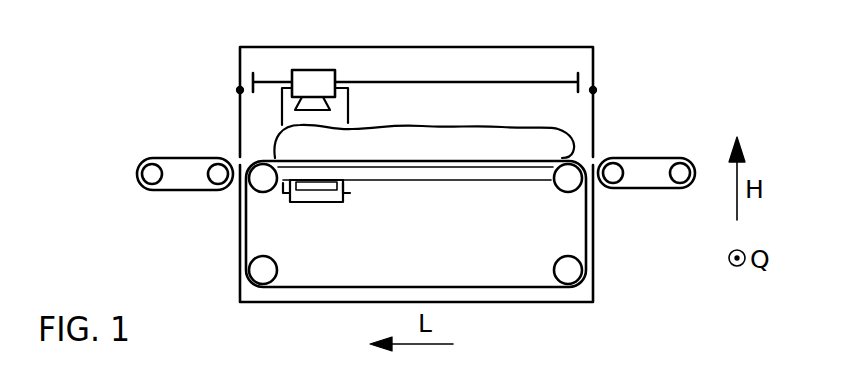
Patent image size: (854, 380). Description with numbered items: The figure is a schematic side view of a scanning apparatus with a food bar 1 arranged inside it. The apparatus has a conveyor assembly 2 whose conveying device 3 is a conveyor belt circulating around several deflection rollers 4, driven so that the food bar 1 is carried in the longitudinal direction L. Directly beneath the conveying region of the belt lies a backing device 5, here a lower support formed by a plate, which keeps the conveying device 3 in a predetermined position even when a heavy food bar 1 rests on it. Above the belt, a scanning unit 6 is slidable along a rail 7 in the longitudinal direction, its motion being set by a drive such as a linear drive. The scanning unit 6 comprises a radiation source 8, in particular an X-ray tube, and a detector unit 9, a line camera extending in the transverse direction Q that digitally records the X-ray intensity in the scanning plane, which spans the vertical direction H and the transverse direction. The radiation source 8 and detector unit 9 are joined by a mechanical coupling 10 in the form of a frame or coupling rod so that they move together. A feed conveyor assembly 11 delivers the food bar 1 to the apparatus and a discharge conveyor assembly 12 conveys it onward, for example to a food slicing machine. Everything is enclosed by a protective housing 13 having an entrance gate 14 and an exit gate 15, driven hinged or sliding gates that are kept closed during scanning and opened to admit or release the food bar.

The food bar 1 is at (487, 128).
The conveyor assembly 2 is at (574, 145).
The conveying device 3 is at (590, 235).
The deflection rollers 4 is at (262, 188).
The backing device 5 is at (432, 170).
The scanning unit 6 is at (302, 66).
The rail 7 is at (407, 82).
The radiation source 8 is at (325, 75).
The detector unit 9 is at (308, 203).
The mechanical coupling 10 is at (348, 101).
The feed conveyor assembly 11 is at (667, 152).
The discharge conveyor assembly 12 is at (164, 148).
The protective housing 13 is at (563, 47).
The entrance gate 14 is at (593, 118).
The exit gate 15 is at (240, 118).